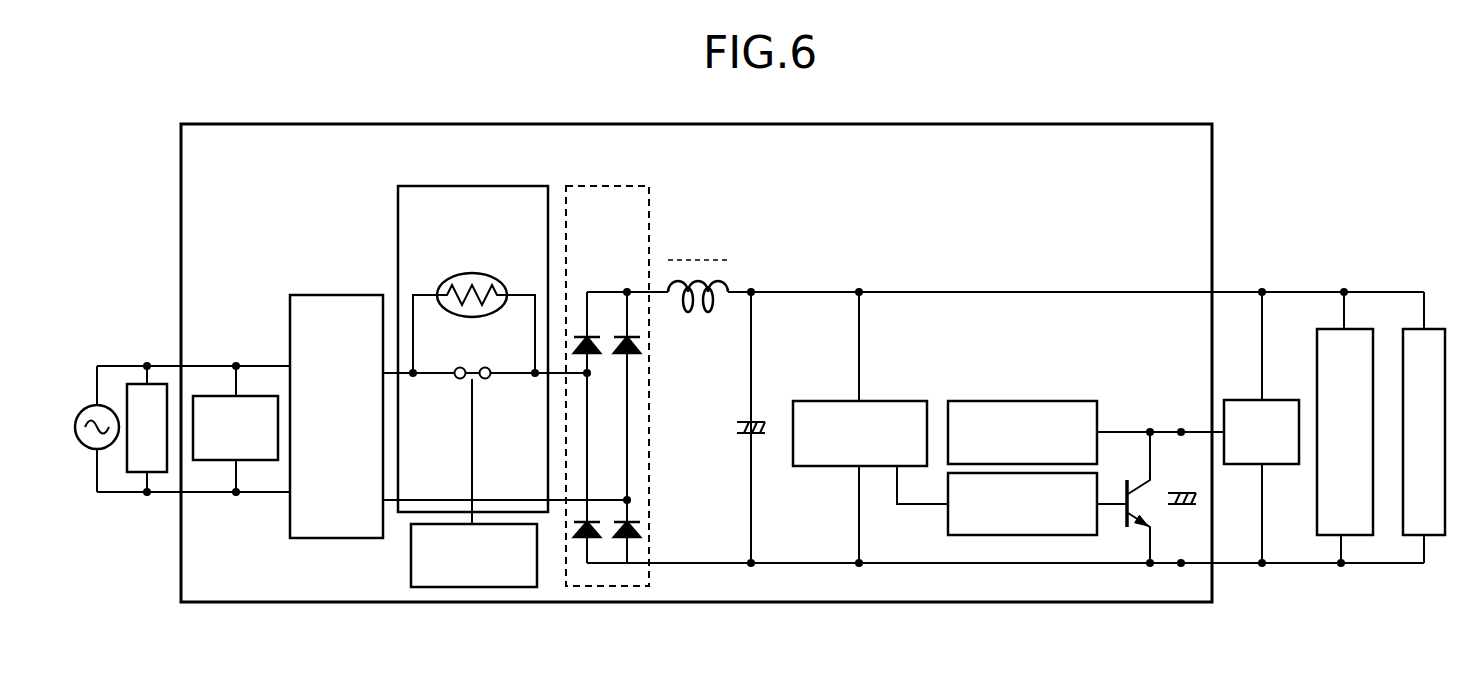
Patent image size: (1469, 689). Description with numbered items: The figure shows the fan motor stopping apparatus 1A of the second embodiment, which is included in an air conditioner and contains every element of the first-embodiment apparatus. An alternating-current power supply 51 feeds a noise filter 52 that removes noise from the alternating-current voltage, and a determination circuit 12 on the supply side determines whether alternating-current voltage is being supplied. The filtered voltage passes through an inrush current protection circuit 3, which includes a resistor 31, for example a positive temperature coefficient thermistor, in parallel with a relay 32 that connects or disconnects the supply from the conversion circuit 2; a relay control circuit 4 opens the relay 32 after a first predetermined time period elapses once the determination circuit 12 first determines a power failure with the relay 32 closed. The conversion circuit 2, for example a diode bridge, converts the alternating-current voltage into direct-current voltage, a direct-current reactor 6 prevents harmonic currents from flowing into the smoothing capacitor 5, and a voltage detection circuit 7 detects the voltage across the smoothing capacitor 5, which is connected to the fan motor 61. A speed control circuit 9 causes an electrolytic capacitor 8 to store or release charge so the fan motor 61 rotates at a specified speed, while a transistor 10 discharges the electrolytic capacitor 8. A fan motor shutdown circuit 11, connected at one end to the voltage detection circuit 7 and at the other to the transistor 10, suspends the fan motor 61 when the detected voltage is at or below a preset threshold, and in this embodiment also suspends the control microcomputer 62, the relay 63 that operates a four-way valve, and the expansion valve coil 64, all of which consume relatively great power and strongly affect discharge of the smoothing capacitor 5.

The fan motor stopping apparatus 1A is at (1162, 124).
The conversion circuit 2 is at (578, 186).
The inrush current protection circuit 3 is at (527, 186).
The relay control circuit 4 is at (472, 587).
The smoothing capacitor 5 is at (740, 433).
The direct-current reactor 6 is at (690, 312).
The voltage detection circuit 7 is at (895, 401).
The electrolytic capacitor 8 is at (1190, 505).
The speed control circuit 9 is at (1068, 401).
The transistor 10 is at (1126, 528).
The fan motor shutdown circuit 11 is at (1066, 535).
The determination circuit 12 is at (246, 396).
The resistor 31 is at (511, 265).
The relay 32 is at (475, 365).
The alternating-current power supply 51 is at (106, 405).
The noise filter 52 is at (345, 295).
The fan motor 61 is at (1234, 400).
The control microcomputer 62 is at (1330, 535).
The relay 63 is at (154, 384).
The expansion valve coil 64 is at (1410, 535).